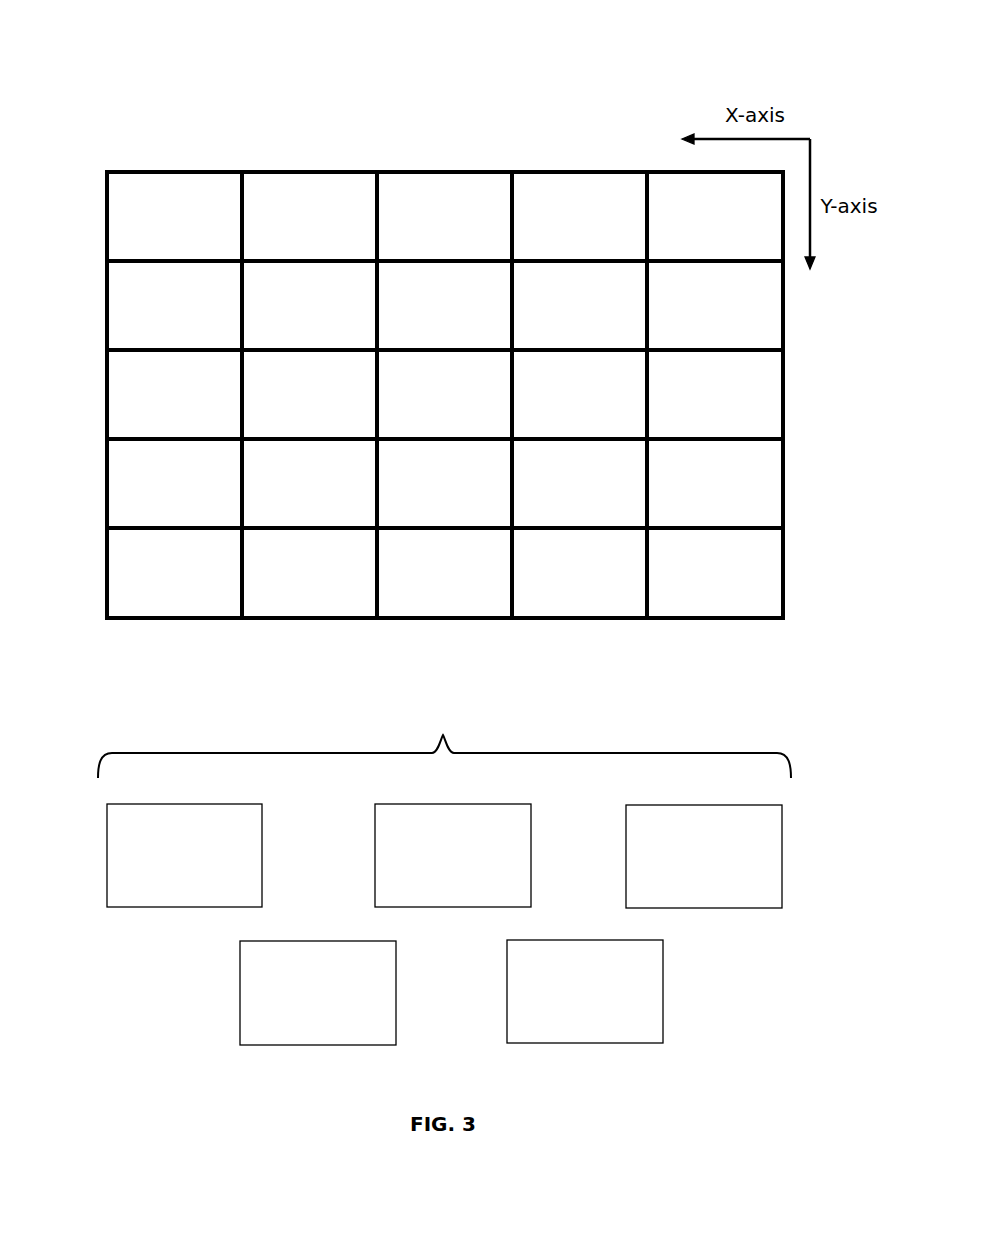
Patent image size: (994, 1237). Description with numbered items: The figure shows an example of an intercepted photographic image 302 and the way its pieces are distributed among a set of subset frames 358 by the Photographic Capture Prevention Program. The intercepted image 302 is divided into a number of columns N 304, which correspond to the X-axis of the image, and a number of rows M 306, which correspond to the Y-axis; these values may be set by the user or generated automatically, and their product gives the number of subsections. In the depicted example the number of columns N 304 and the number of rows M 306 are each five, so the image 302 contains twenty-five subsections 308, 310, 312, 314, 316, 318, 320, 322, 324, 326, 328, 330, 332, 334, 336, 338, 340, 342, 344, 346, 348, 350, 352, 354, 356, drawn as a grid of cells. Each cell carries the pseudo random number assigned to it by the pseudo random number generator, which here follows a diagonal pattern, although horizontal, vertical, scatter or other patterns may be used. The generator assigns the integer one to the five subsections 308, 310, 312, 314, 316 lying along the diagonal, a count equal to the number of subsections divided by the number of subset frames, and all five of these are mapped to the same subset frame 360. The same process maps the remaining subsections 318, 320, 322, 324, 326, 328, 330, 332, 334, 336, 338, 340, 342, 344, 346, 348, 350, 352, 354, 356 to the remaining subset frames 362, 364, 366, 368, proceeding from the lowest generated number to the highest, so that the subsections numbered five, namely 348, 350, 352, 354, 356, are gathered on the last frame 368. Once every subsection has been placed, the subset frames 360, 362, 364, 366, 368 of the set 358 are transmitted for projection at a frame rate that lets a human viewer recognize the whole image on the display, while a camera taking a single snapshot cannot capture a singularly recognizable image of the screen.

The intercepted photographic image 302 is at (175, 172).
The number of columns N 304 is at (462, 135).
The number of rows M 306 is at (822, 375).
The subsection 308 is at (194, 257).
The subsection 310 is at (290, 346).
The subsection 312 is at (464, 435).
The subsection 314 is at (560, 524).
The subsection 316 is at (696, 613).
The subsection 318 is at (290, 257).
The subsection 320 is at (464, 346).
The subsection 322 is at (560, 435).
The subsection 324 is at (696, 524).
The subsection 326 is at (194, 613).
The subsection 328 is at (464, 257).
The subsection 330 is at (560, 346).
The subsection 332 is at (696, 435).
The subsection 334 is at (194, 524).
The subsection 336 is at (290, 613).
The subsection 338 is at (560, 257).
The subsection 340 is at (696, 346).
The subsection 342 is at (194, 435).
The subsection 344 is at (290, 524).
The subsection 346 is at (464, 613).
The subsection 348 is at (696, 257).
The subsection 350 is at (194, 346).
The subsection 352 is at (290, 435).
The subsection 354 is at (464, 524).
The subsection 356 is at (560, 613).
The subset frames 358 is at (444, 874).
The subset frame 360 is at (166, 898).
The subset frame 362 is at (434, 898).
The subset frame 364 is at (684, 900).
The subset frame 366 is at (299, 1036).
The subset frame 368 is at (568, 1034).